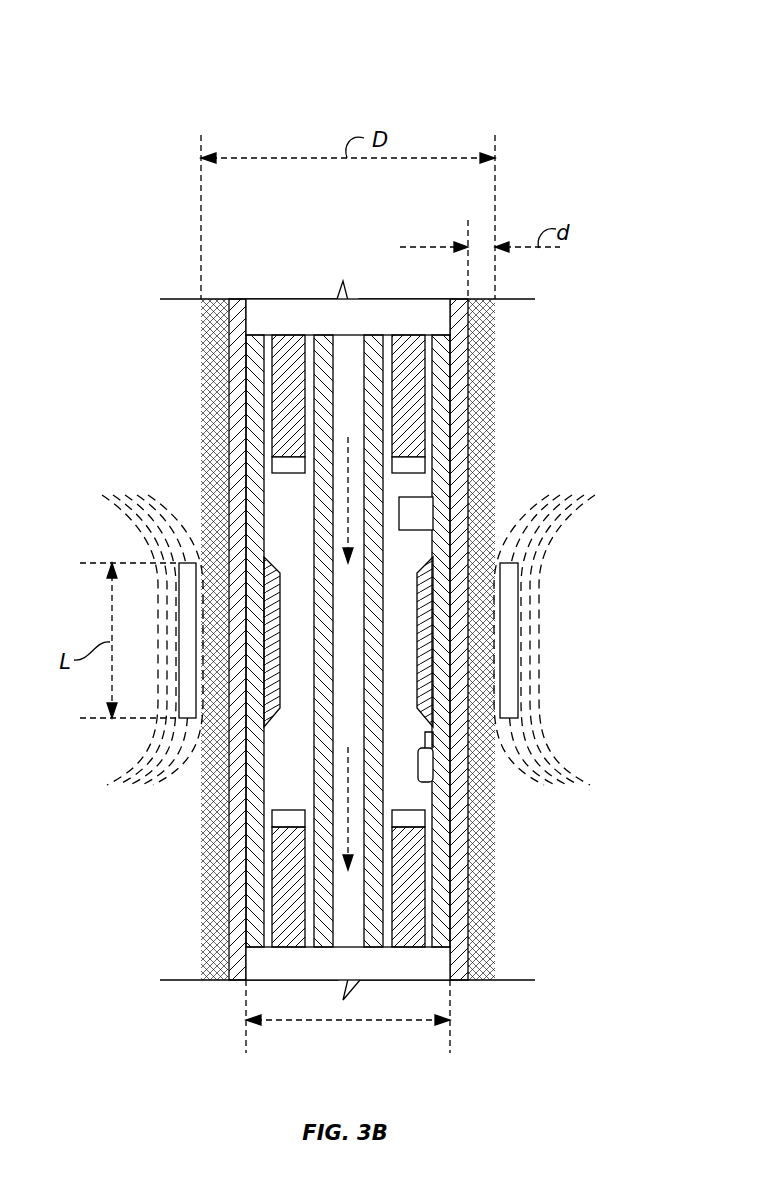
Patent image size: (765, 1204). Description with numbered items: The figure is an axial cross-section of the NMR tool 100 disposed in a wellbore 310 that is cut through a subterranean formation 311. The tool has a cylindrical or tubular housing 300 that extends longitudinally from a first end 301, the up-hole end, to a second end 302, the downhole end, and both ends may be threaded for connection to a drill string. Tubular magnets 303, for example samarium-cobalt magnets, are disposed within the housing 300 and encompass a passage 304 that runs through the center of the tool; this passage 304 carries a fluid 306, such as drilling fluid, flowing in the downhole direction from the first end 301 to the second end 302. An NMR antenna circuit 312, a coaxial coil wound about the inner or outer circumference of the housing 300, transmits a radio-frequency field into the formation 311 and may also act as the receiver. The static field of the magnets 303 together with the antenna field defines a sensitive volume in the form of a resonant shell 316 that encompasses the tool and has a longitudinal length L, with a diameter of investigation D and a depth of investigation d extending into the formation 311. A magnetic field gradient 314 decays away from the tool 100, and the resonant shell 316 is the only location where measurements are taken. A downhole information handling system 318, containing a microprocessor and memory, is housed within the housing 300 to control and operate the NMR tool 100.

The NMR tool 100 is at (121, 97).
The housing 300 is at (224, 935).
The first end 301 is at (190, 283).
The second end 302 is at (232, 990).
The magnets 303 is at (277, 405).
The passage 304 is at (270, 771).
The fluid 306 is at (348, 529).
The wellbore 310 is at (348, 1020).
The subterranean formation 311 is at (212, 860).
The NMR antenna circuit 312 is at (430, 708).
The magnetic field gradient 314 is at (118, 507).
The resonant shell 316 is at (510, 640).
The downhole information handling system 318 is at (417, 512).